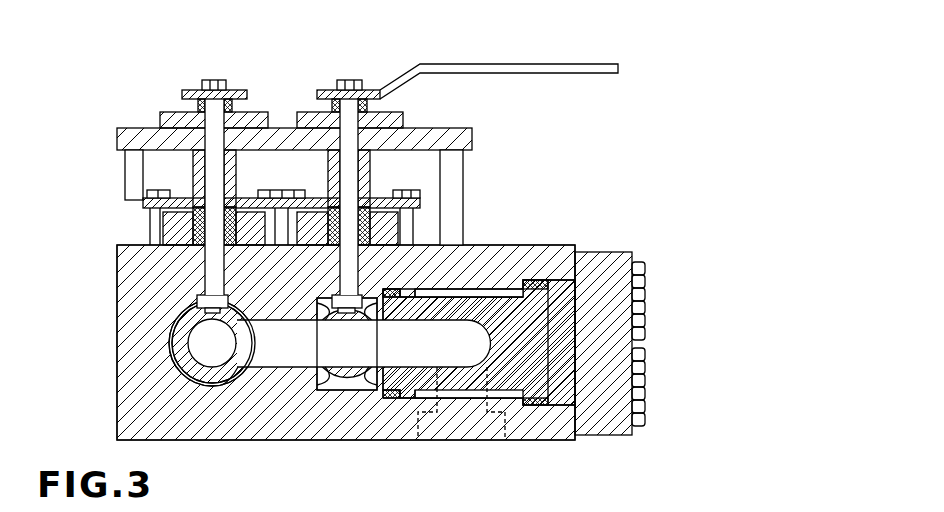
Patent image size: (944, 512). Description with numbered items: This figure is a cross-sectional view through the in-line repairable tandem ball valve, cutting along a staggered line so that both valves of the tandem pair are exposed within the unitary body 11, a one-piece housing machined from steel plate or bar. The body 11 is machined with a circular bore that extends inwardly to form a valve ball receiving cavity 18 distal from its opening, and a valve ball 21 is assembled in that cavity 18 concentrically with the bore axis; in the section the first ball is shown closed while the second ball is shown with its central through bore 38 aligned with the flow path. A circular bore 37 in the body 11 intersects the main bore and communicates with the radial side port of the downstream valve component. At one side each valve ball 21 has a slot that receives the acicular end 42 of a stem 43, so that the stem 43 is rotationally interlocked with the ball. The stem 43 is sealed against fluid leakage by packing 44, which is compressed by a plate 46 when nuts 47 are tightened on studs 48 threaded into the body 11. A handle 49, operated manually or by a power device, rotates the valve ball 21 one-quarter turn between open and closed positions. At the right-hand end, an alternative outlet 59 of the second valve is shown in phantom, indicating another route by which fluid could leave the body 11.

The unitary body 11 is at (117, 415).
The valve ball receiving cavity 18 is at (238, 367).
The valve ball 21 is at (205, 330).
The circular bore 37 is at (287, 360).
The central through bore 38 is at (187, 367).
The acicular end 42 is at (200, 308).
The stem 43 is at (208, 280).
The packing 44 is at (193, 233).
The plate 46 is at (125, 160).
The nuts 47 is at (180, 197).
The studs 48 is at (152, 214).
The handle 49 is at (200, 89).
The alternative outlet 59 is at (506, 423).